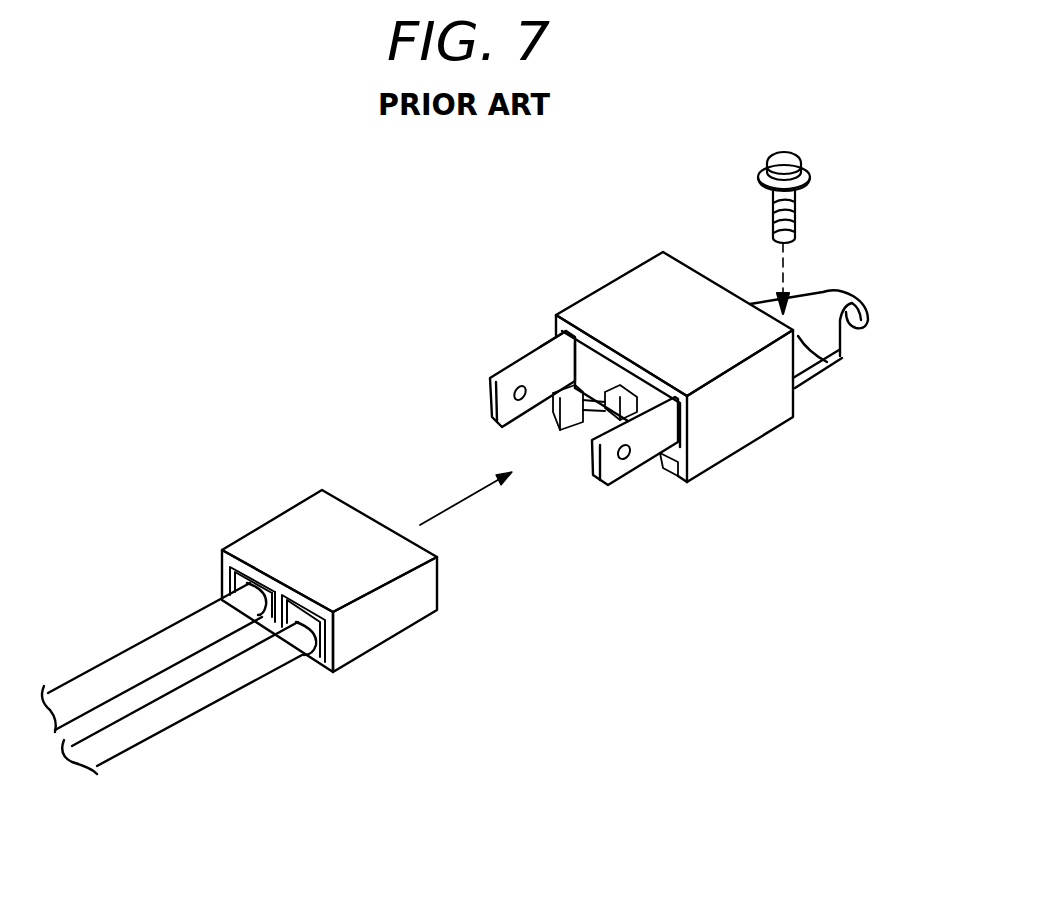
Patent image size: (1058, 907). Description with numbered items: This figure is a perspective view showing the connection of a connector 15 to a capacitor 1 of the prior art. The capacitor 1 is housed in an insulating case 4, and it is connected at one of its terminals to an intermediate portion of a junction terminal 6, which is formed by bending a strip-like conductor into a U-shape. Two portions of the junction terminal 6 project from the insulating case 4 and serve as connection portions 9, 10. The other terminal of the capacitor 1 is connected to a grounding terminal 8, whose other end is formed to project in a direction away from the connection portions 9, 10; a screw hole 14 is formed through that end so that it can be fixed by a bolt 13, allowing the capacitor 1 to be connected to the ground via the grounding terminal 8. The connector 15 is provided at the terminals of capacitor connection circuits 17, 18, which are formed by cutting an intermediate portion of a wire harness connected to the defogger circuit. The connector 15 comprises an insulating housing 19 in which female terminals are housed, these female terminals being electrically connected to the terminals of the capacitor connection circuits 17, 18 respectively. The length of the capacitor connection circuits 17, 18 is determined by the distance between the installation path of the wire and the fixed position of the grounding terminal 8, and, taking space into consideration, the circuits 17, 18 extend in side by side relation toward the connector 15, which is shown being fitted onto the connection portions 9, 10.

The capacitor 1 is at (700, 312).
The insulating case 4 is at (633, 318).
The junction terminal 6 is at (547, 344).
The grounding terminal 8 is at (856, 295).
The connection portion 9 is at (513, 364).
The connection portion 10 is at (643, 442).
The bolt 13 is at (790, 152).
The screw hole 14 is at (827, 370).
The connector 15 is at (266, 500).
The capacitor connection circuit 17 is at (153, 641).
The capacitor connection circuit 18 is at (203, 683).
The insulating housing 19 is at (367, 568).